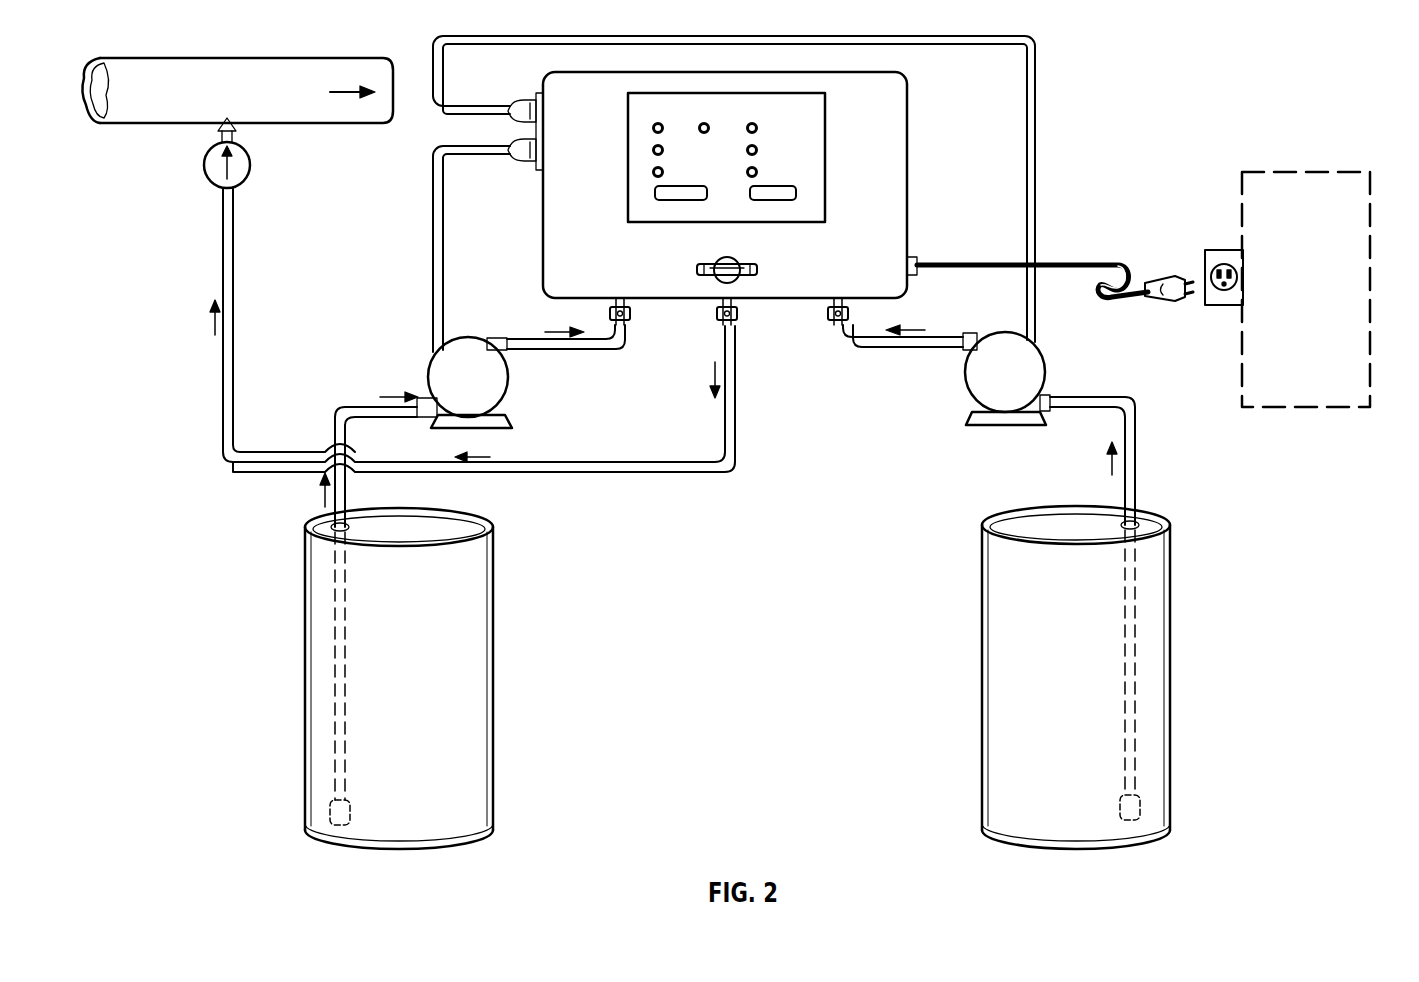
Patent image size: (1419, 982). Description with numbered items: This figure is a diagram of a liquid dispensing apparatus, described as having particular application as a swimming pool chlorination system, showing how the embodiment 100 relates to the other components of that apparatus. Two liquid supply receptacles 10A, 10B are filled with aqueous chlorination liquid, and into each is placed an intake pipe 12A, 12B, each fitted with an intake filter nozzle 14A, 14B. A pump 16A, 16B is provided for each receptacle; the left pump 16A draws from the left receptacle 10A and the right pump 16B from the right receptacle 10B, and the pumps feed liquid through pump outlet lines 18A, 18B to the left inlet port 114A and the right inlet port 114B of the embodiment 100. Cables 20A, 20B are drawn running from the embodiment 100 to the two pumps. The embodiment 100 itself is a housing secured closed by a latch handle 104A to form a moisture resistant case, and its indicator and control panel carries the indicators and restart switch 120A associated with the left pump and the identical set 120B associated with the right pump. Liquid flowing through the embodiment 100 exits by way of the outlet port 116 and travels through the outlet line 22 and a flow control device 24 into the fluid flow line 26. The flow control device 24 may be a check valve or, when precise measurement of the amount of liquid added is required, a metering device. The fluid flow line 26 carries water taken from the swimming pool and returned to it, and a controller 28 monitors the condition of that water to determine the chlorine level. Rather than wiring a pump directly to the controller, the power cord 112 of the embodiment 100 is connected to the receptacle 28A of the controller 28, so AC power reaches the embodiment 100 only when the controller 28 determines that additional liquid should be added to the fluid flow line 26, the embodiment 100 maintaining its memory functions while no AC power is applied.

The left liquid supply receptacle 10A is at (429, 649).
The right liquid supply receptacle 10B is at (1069, 649).
The intake pipe 12A is at (347, 600).
The intake pipe 12B is at (1125, 576).
The intake filter nozzle 14A is at (352, 806).
The intake filter nozzle 14B is at (1120, 805).
The left pump 16A is at (480, 386).
The right pump 16B is at (1017, 381).
The pump outlet line 18A is at (567, 350).
The pump outlet line 18B is at (910, 348).
The left pump power cable 20A is at (442, 256).
The right pump power cable 20B is at (1036, 190).
The outlet line 22 is at (736, 416).
The flow control device 24 is at (250, 167).
The fluid flow line 26 is at (300, 58).
The controller 28 is at (1317, 306).
The receptacle 28A is at (1223, 250).
The embodiment 100 is at (920, 96).
The latch handle 104A is at (736, 263).
The power cord 112 is at (1153, 262).
The left inlet port 114A is at (628, 321).
The right inlet port 114B is at (828, 322).
The outlet port 116 is at (737, 319).
The indicators and restart switch for left pump 120A is at (671, 88).
The indicators and restart switch for right pump 120B is at (767, 88).